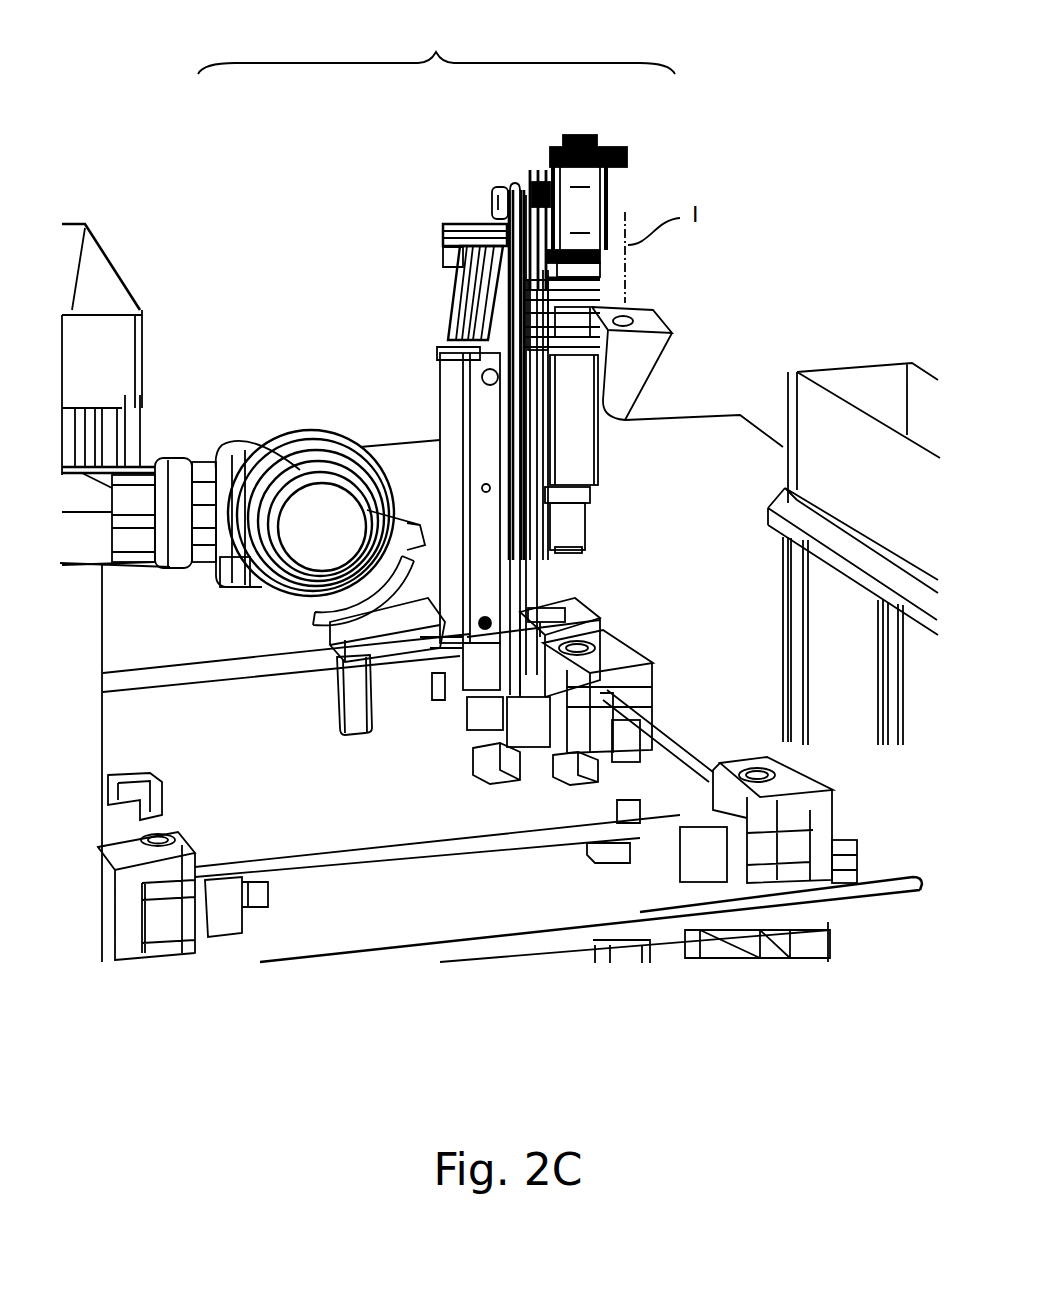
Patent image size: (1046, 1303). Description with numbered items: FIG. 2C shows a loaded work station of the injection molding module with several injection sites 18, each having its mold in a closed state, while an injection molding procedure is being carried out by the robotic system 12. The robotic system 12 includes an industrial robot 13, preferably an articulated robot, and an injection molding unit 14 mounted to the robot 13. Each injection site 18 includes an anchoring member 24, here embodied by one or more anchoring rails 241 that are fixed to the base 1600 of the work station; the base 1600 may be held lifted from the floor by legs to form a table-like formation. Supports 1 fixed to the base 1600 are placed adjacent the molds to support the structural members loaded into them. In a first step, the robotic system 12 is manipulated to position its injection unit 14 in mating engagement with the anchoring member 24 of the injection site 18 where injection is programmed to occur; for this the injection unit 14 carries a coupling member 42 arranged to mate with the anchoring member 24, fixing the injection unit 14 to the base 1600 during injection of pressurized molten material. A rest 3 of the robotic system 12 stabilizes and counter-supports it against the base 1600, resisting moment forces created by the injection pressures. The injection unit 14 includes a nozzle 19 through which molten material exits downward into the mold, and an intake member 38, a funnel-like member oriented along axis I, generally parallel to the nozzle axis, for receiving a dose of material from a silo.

The robotic system 12 is at (436, 42).
The industrial robot 13 is at (320, 527).
The injection molding unit 14 is at (575, 344).
The intake member 38 is at (632, 363).
The injection site 18 is at (606, 597).
The nozzle 19 is at (546, 609).
The coupling member 42 is at (460, 668).
The anchoring rail 241 is at (485, 713).
The support 1 is at (600, 789).
The rest 3 is at (354, 695).
The anchoring member 24 is at (437, 731).
The base 1600 is at (491, 763).